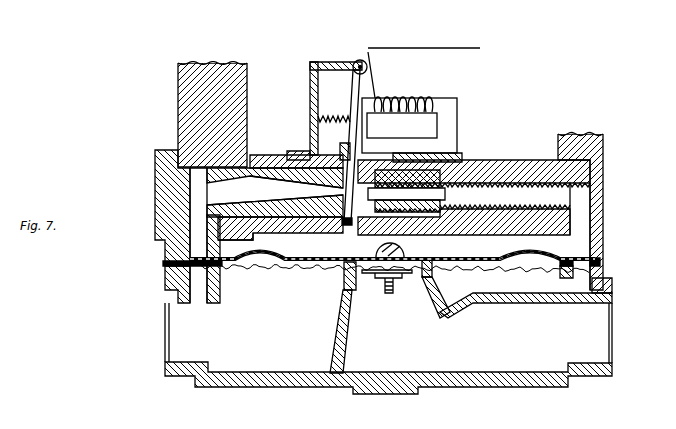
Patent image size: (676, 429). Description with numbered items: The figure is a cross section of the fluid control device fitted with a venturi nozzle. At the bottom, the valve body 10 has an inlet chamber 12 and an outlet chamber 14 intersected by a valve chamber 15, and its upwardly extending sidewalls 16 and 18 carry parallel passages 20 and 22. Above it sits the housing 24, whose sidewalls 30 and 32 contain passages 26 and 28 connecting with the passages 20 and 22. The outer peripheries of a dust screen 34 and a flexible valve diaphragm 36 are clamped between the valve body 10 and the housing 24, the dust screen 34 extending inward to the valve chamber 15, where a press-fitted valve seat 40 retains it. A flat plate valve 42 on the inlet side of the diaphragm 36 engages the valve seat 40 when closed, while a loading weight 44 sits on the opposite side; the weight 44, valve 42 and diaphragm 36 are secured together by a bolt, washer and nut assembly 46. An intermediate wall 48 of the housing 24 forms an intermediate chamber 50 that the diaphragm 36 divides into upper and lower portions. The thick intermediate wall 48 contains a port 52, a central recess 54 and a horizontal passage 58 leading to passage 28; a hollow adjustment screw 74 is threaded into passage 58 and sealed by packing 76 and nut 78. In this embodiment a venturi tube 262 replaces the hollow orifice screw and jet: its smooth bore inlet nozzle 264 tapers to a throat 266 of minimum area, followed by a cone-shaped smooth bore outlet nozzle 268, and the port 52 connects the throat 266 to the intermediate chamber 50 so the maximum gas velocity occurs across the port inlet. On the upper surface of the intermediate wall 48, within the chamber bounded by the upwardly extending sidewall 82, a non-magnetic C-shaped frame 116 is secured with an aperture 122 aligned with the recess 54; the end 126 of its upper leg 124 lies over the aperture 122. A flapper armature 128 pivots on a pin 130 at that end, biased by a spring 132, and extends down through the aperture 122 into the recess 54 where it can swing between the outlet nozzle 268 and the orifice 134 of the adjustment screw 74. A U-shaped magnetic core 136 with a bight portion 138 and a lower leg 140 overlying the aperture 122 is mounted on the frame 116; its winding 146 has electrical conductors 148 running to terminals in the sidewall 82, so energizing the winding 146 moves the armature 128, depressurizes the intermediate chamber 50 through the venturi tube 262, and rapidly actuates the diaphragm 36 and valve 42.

The valve body 10 is at (460, 402).
The inlet chamber 12 is at (261, 336).
The outlet chamber 14 is at (585, 344).
The valve chamber 15 is at (386, 348).
The sidewall 16 is at (178, 285).
The sidewall 18 is at (600, 286).
The passage 20 is at (208, 291).
The passage 22 is at (585, 264).
The housing 24 is at (594, 162).
The passage 26 is at (188, 259).
The passage 28 is at (583, 237).
The sidewall 30 is at (198, 246).
The sidewall 32 is at (597, 221).
The dust screen 34 is at (520, 269).
The valve diaphragm 36 is at (249, 254).
The valve seat 40 is at (348, 283).
The flat plate valve 42 is at (433, 264).
The loading weight 44 is at (428, 262).
The bolt, washer and nut assembly 46 is at (391, 292).
The intermediate wall 48 is at (462, 234).
The intermediate chamber 50 is at (530, 249).
The port 52 is at (256, 233).
The recess 54 is at (385, 184).
The horizontal passage 58 is at (505, 200).
The hollow adjustment screw 74 is at (445, 192).
The packing 76 is at (404, 225).
The nut 78 is at (388, 210).
The sidewall 82 is at (183, 93).
The C-shaped frame 116 is at (310, 76).
The aperture 122 is at (348, 156).
The upper leg 124 is at (330, 63).
The end 126 is at (355, 62).
The flapper armature 128 is at (355, 95).
The pin 130 is at (365, 61).
The spring 132 is at (318, 118).
The orifice 134 is at (356, 226).
The U-shaped magnetic core 136 is at (378, 151).
The bight portion 138 is at (458, 120).
The lower leg 140 is at (412, 151).
The winding 146 is at (415, 95).
The electrical conductors 148 is at (373, 75).
The venturi tube 262 is at (252, 166).
The smooth bore inlet nozzle 264 is at (243, 203).
The throat 266 is at (257, 178).
The smooth bore outlet nozzle 268 is at (295, 195).